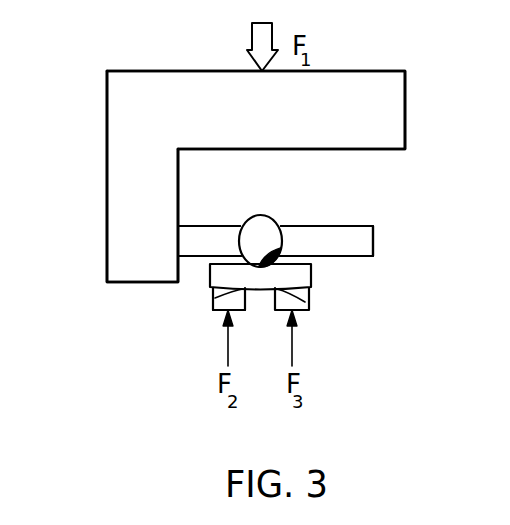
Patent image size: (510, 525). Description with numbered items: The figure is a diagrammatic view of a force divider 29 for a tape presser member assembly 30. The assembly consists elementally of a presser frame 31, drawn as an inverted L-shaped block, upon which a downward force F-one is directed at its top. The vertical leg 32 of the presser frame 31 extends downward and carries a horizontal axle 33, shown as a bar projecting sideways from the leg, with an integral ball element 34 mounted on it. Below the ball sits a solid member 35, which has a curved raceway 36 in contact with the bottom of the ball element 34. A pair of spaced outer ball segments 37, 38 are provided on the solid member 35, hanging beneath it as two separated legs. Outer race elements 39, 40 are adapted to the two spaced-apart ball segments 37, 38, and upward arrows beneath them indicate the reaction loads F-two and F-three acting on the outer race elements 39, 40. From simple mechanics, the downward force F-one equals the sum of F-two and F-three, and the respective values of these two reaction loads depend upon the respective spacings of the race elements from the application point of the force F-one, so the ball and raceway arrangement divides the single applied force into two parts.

The force divider 29 is at (362, 217).
The tape presser member assembly 30 is at (406, 135).
The presser frame 31 is at (357, 123).
The vertical leg 32 is at (107, 180).
The horizontal axle 33 is at (365, 256).
The ball element 34 is at (252, 217).
The solid member 35 is at (311, 270).
The curved raceway 36 is at (258, 264).
The outer ball segment 37 is at (309, 299).
The outer ball segment 38 is at (215, 298).
The outer race element 39 is at (305, 302).
The outer race element 40 is at (213, 310).